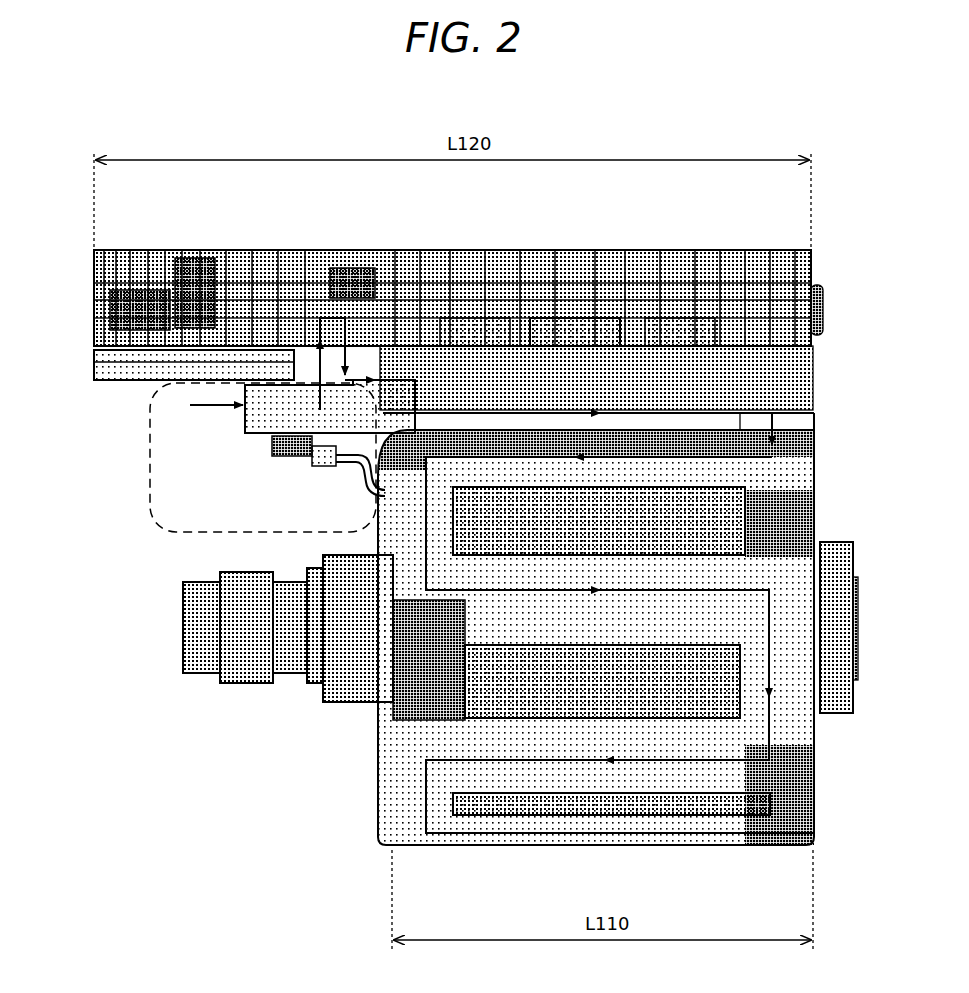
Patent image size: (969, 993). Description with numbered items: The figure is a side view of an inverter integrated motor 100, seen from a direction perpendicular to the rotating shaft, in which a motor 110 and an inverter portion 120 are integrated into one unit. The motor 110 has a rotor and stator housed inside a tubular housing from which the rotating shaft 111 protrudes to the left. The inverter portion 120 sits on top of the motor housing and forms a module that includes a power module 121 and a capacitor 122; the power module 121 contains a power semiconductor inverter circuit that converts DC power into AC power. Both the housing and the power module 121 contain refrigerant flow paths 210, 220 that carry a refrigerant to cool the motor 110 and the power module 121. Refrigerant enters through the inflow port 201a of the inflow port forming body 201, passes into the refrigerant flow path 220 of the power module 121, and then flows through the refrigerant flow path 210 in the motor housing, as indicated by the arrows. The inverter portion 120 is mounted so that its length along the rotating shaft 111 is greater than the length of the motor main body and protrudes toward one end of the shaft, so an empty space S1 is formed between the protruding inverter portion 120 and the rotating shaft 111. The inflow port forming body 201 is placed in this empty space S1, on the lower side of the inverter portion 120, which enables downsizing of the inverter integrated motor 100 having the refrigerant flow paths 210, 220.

The inverter integrated motor 100 is at (824, 238).
The motor 110 is at (815, 493).
The rotating shaft 111 is at (248, 688).
The inverter portion 120 is at (95, 325).
The power module 121 is at (370, 320).
The capacitor 122 is at (565, 330).
The inflow port forming body 201 is at (265, 436).
The inflow port 201a is at (245, 418).
The refrigerant flow path 210 is at (770, 730).
The refrigerant flow path 220 is at (340, 318).
The empty space S1 is at (150, 445).